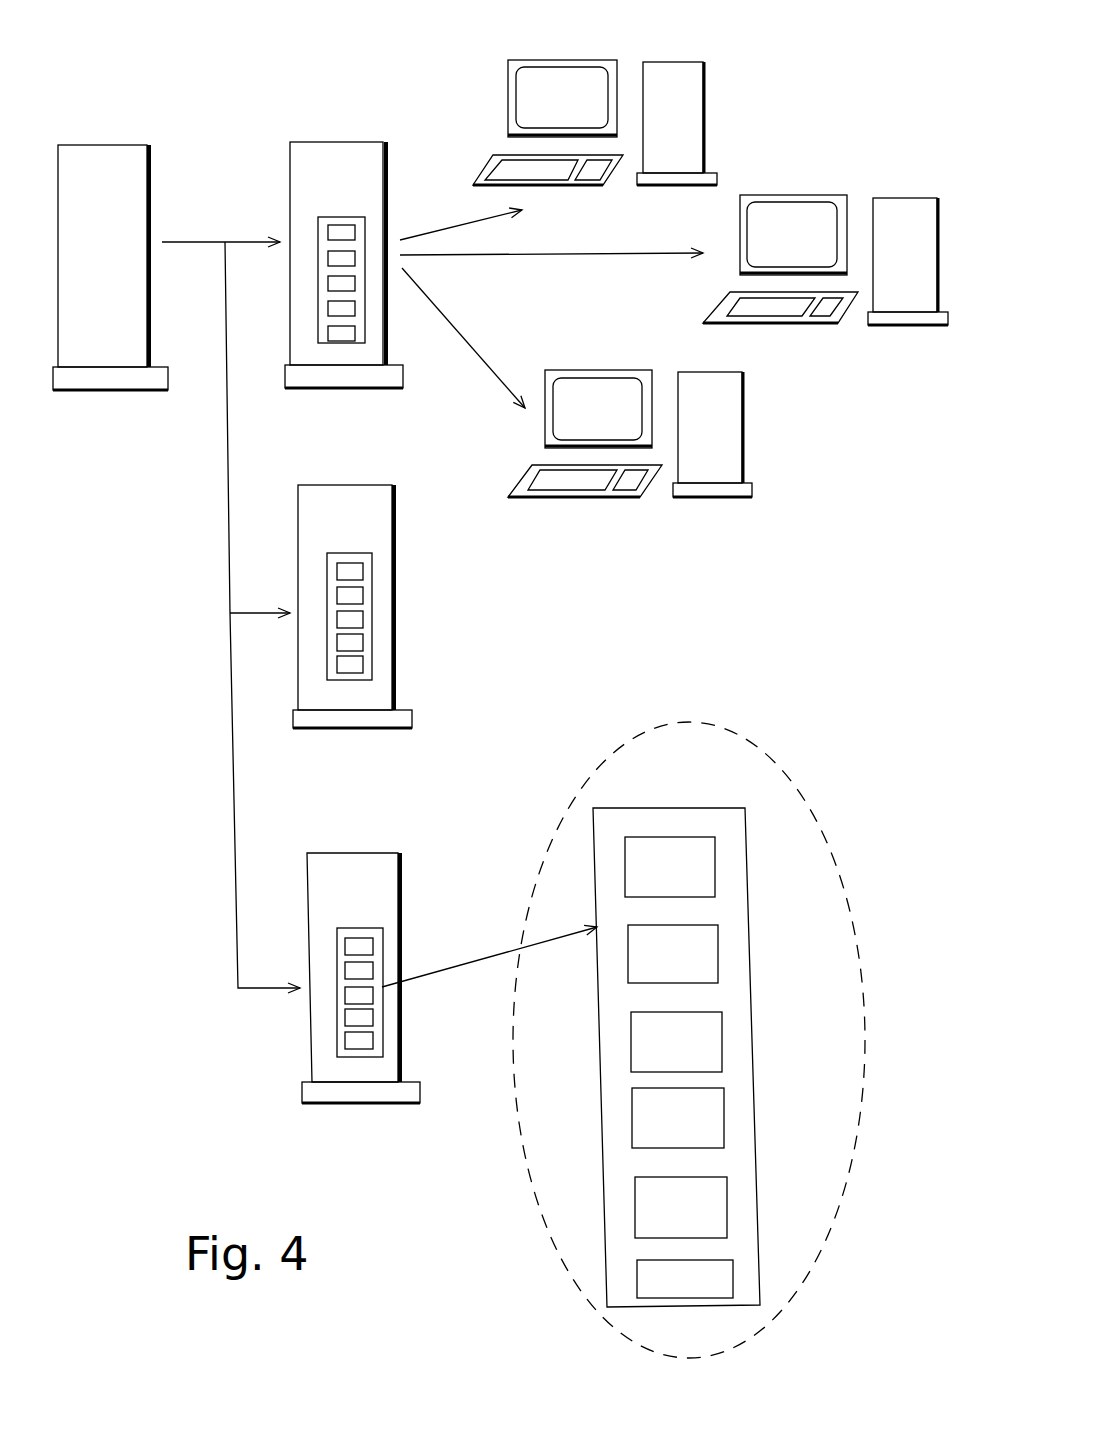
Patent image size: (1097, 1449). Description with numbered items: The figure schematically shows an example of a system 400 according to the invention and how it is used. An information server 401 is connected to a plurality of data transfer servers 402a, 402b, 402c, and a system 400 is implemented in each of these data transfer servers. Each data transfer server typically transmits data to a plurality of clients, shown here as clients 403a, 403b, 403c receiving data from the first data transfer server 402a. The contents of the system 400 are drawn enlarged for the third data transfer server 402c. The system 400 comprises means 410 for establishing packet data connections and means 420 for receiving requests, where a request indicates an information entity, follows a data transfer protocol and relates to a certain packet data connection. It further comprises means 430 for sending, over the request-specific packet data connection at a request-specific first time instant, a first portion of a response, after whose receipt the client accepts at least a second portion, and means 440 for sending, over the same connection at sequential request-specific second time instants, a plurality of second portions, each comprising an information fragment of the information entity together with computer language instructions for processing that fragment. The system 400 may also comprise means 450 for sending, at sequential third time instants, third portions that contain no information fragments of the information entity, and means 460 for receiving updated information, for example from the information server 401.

The system 400 is at (551, 787).
The information server 401 is at (100, 142).
The data transfer server 402a is at (340, 137).
The data transfer server 402b is at (343, 483).
The data transfer server 402c is at (353, 858).
The client 403a is at (630, 60).
The client 403b is at (863, 187).
The client 403c is at (660, 505).
The means for establishing packet data connections 410 is at (670, 867).
The means for receiving requests 420 is at (673, 954).
The means for sending a first portion of a response 430 is at (676, 1042).
The means for sending second portions of a response 440 is at (678, 1118).
The means for sending third portions of a response 450 is at (681, 1207).
The means for receiving updated information 460 is at (685, 1279).